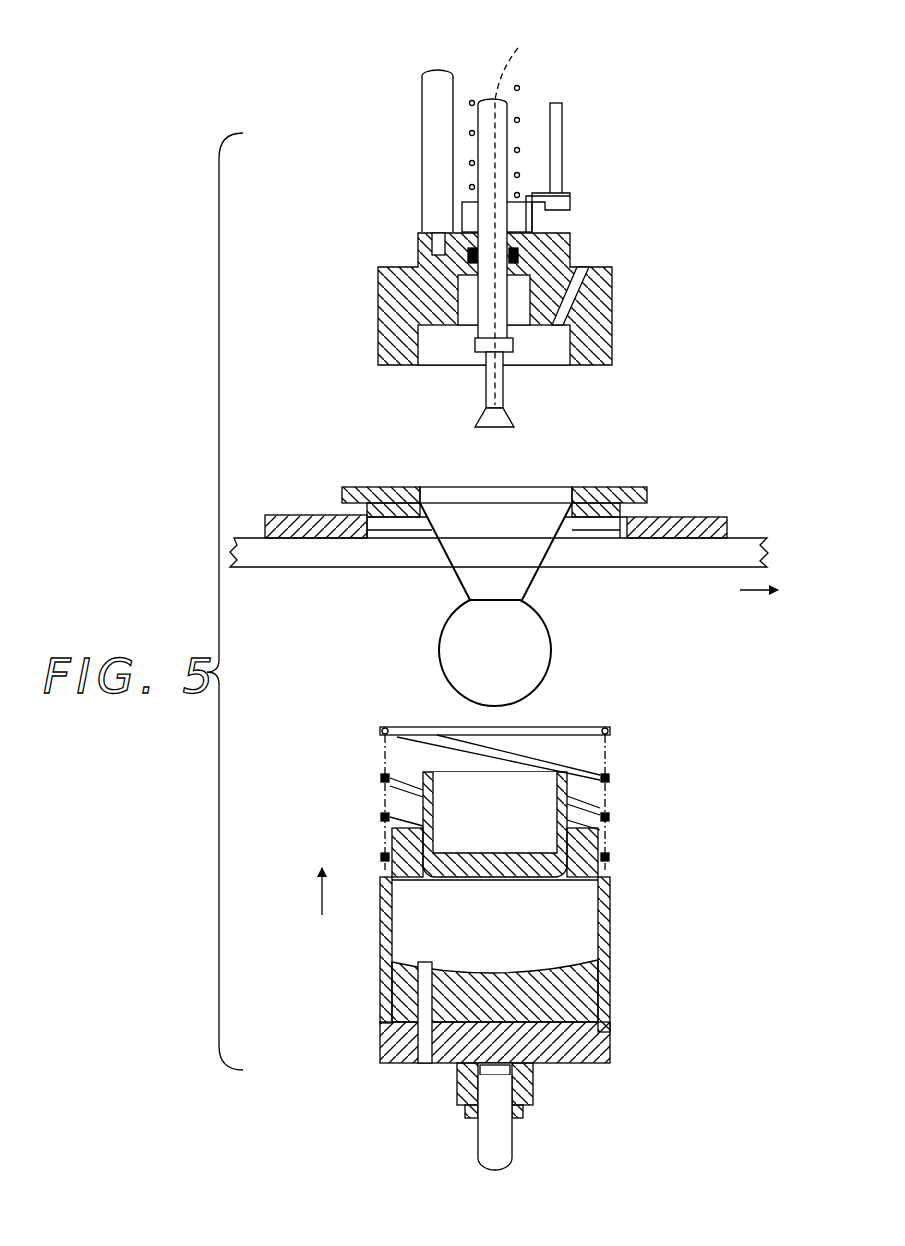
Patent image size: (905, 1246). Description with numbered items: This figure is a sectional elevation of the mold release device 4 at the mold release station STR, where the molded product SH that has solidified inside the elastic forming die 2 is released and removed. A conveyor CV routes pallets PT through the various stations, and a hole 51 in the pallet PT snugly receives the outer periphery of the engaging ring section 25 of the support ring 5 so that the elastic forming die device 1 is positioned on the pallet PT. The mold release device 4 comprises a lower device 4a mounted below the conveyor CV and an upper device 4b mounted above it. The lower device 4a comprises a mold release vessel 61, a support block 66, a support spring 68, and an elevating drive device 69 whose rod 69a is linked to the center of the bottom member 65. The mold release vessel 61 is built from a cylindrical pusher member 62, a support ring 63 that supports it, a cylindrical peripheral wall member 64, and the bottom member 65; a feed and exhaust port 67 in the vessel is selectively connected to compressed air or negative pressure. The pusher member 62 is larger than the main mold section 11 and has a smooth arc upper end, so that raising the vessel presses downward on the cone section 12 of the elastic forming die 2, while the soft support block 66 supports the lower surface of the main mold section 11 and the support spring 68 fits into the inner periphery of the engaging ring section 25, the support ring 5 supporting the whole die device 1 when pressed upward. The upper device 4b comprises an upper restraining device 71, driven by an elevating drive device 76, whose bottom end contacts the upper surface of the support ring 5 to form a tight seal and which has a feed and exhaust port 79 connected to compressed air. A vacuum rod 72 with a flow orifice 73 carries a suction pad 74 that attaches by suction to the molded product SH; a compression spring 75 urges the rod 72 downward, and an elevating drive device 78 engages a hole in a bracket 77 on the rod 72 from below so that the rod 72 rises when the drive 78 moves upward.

The mold release device 4 is at (700, 110).
The lower device 4a is at (652, 758).
The upper device 4b is at (640, 240).
The upper restraining device 71 is at (598, 312).
The vacuum rod 72 is at (505, 385).
The flow orifice 73 is at (519, 216).
The suction pad 74 is at (505, 415).
The compression spring 75 is at (520, 88).
The elevating drive device 76 is at (427, 176).
The bracket 77 is at (568, 198).
The elevating drive device 78 is at (563, 152).
The feed and exhaust port 79 is at (584, 267).
The elastic forming die device 1 is at (640, 480).
The elastic forming die 2 is at (540, 578).
The support ring 5 is at (600, 485).
The cone section 12 is at (462, 580).
The engaging ring section 25 is at (615, 530).
The hole 51 is at (622, 520).
The main mold section 11 is at (440, 653).
The molded product SH is at (548, 656).
The pallet PT is at (705, 517).
The conveyor CV is at (752, 538).
The mold release station STR is at (332, 433).
The mold release vessel 61 is at (612, 900).
The cylindrical pusher member 62 is at (600, 806).
The support ring 63 is at (605, 845).
The cylindrical peripheral wall member 64 is at (610, 942).
The bottom member 65 is at (610, 1052).
The support block 66 is at (610, 992).
The feed and exhaust port 67 is at (420, 1065).
The support spring 68 is at (605, 727).
The elevating drive device 69 is at (516, 1153).
The rod 69a is at (513, 1128).